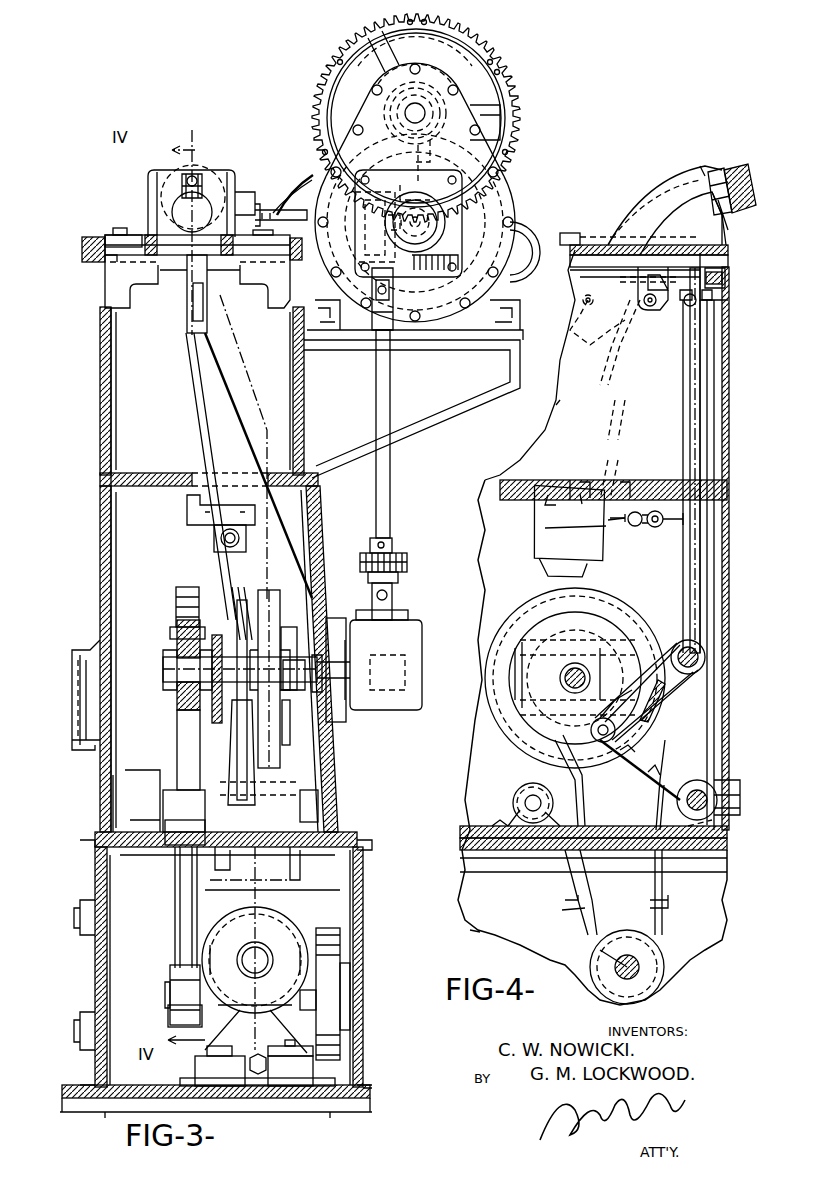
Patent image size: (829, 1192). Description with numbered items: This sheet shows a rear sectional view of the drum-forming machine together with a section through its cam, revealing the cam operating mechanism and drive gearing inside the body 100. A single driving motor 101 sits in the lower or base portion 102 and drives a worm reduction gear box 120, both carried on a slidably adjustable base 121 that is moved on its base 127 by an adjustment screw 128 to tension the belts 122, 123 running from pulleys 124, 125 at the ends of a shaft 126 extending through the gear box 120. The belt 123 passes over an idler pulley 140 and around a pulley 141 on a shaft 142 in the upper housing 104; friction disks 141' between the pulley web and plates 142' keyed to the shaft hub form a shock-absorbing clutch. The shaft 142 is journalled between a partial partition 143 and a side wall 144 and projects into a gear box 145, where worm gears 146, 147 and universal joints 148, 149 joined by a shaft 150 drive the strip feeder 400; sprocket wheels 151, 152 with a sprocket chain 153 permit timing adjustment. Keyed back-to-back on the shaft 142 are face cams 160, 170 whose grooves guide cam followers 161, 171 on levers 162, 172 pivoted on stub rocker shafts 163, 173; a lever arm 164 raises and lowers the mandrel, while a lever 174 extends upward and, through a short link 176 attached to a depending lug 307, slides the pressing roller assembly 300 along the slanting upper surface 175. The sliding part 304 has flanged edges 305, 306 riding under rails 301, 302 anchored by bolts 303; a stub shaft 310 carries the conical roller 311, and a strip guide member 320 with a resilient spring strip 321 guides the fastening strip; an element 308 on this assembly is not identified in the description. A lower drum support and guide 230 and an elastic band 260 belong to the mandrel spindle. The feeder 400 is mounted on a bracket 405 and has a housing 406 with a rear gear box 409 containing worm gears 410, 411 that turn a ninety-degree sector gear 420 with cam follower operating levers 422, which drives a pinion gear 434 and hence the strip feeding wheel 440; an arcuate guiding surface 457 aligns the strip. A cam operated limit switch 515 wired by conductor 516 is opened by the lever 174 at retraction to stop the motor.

In FIG. 3, the body 100 is at (72, 782).
In FIG. 4, the body 100 is at (472, 774).
In FIG. 3, the driving motor 101 is at (270, 920).
In FIG. 3, the lower or base portion 102 is at (365, 883).
In FIG. 4, the lower or base portion 102 is at (513, 944).
In FIG. 3, the upper portion or housing 104 is at (320, 507).
In FIG. 4, the upper portion or housing 104 is at (605, 423).
In FIG. 3, the worm reduction gear box 120 is at (290, 1010).
In FIG. 3, the slidably adjustable base 121 is at (306, 1073).
In FIG. 3, the belt 122 is at (340, 935).
In FIG. 3, the belt 123 is at (180, 885).
In FIG. 4, the belt 123 is at (655, 886).
In FIG. 3, the pulley 124 is at (343, 1035).
In FIG. 3, the pulley 125 is at (170, 1012).
In FIG. 4, the pulley 125 is at (645, 940).
In FIG. 3, the shaft 126 is at (170, 990).
In FIG. 4, the shaft 126 is at (600, 950).
In FIG. 3, the base 127 is at (275, 1086).
In FIG. 3, the adjustment screw 128 is at (250, 1066).
In FIG. 3, the idler pulley 140 is at (180, 847).
In FIG. 4, the idler pulley 140 is at (525, 783).
In FIG. 3, the pulley 141 is at (168, 606).
In FIG. 3, the friction disks 141' is at (160, 637).
In FIG. 3, the shaft 142 is at (219, 679).
In FIG. 4, the shaft 142 is at (584, 666).
In FIG. 3, the plates 142' is at (159, 695).
In FIG. 3, the partial partition 143 is at (185, 627).
In FIG. 4, the partial partition 143 is at (696, 728).
In FIG. 3, the side wall 144 is at (330, 755).
In FIG. 3, the gear box 145 is at (355, 708).
In FIG. 3, the worm gear 146 is at (405, 708).
In FIG. 3, the worm gear 147 is at (412, 632).
In FIG. 3, the universal joint 148 is at (392, 602).
In FIG. 3, the universal joint 149 is at (390, 320).
In FIG. 3, the shaft 150 is at (390, 460).
In FIG. 3, the sprocket wheel 151 is at (392, 543).
In FIG. 3, the sprocket wheel 152 is at (398, 576).
In FIG. 3, the sprocket chain 153 is at (407, 560).
In FIG. 3, the face cam 160 is at (232, 600).
In FIG. 3, the cam follower 161 is at (245, 730).
In FIG. 3, the lever 162 is at (240, 760).
In FIG. 4, the lever 162 is at (632, 790).
In FIG. 3, the stub rocker shaft 163 is at (290, 788).
In FIG. 4, the stub rocker shaft 163 is at (697, 780).
In FIG. 4, the lever arm 164 is at (740, 780).
In FIG. 3, the face cam 170 is at (266, 590).
In FIG. 4, the face cam 170 is at (545, 592).
In FIG. 3, the cam follower 171 is at (285, 740).
In FIG. 4, the cam follower 171 is at (598, 718).
In FIG. 3, the lever 172 is at (295, 720).
In FIG. 4, the lever 172 is at (660, 690).
In FIG. 4, the stub rocker shaft 173 is at (683, 640).
In FIG. 3, the lever 174 is at (198, 398).
In FIG. 4, the lever 174 is at (688, 570).
In FIG. 3, the slanting upper surface 175 is at (135, 258).
In FIG. 4, the slanting upper surface 175 is at (729, 262).
In FIG. 3, the short link 176 is at (193, 305).
In FIG. 4, the short link 176 is at (645, 338).
In FIG. 3, the frusto-conical lower drum support and guide 230 is at (72, 683).
In FIG. 3, the stretched elastic band 260 is at (82, 250).
In FIG. 3, the pressing roller assembly 300 is at (139, 207).
In FIG. 4, the pressing roller assembly 300 is at (684, 174).
In FIG. 3, the rail 301 is at (282, 242).
In FIG. 3, the rail 302 is at (105, 238).
In FIG. 3, the bolts 303 is at (125, 215).
In FIG. 3, the sliding part 304 is at (160, 170).
In FIG. 4, the sliding part 304 is at (652, 208).
In FIG. 3, the flanged edge 305 is at (252, 258).
In FIG. 3, the flanged edge 306 is at (128, 252).
In FIG. 3, the depending lug 307 is at (187, 290).
In FIG. 4, the depending lug 307 is at (632, 322).
In FIG. 4, the arm end 308 is at (722, 225).
In FIG. 3, the stub shaft 310 is at (182, 186).
In FIG. 4, the stub shaft 310 is at (745, 165).
In FIG. 3, the conical roller 311 is at (210, 175).
In FIG. 3, the strip guide member 320 is at (280, 210).
In FIG. 3, the resilient spring strip 321 is at (285, 190).
In FIG. 3, the strip feeder 400 is at (514, 77).
In FIG. 3, the bracket 405 is at (430, 397).
In FIG. 3, the housing 406 is at (490, 170).
In FIG. 3, the gear box 409 is at (440, 212).
In FIG. 3, the worm gear 410 is at (365, 236).
In FIG. 3, the worm gear 411 is at (445, 218).
In FIG. 3, the sector gear 420 is at (400, 120).
In FIG. 3, the cam follower operating levers 422 is at (432, 152).
In FIG. 3, the pinion gear 434 is at (425, 72).
In FIG. 3, the strip feeding wheel 440 is at (470, 30).
In FIG. 3, the arcuate guiding surface 457 is at (525, 235).
In FIG. 3, the cam operated limit switch 515 is at (206, 546).
In FIG. 4, the cam operated limit switch 515 is at (565, 548).
In FIG. 4, the conductor 516 is at (655, 527).